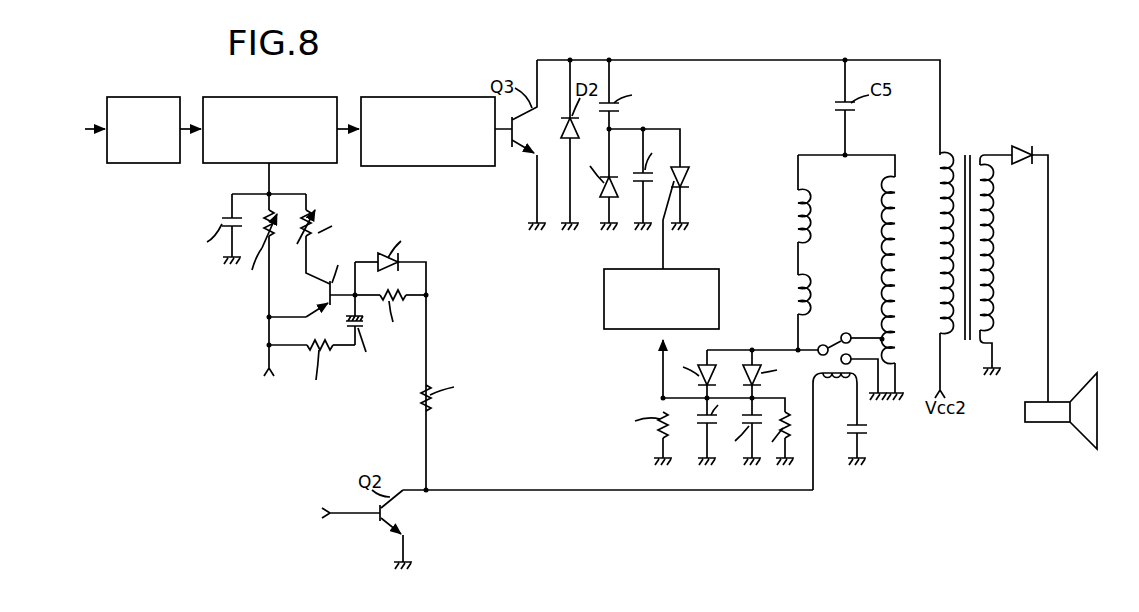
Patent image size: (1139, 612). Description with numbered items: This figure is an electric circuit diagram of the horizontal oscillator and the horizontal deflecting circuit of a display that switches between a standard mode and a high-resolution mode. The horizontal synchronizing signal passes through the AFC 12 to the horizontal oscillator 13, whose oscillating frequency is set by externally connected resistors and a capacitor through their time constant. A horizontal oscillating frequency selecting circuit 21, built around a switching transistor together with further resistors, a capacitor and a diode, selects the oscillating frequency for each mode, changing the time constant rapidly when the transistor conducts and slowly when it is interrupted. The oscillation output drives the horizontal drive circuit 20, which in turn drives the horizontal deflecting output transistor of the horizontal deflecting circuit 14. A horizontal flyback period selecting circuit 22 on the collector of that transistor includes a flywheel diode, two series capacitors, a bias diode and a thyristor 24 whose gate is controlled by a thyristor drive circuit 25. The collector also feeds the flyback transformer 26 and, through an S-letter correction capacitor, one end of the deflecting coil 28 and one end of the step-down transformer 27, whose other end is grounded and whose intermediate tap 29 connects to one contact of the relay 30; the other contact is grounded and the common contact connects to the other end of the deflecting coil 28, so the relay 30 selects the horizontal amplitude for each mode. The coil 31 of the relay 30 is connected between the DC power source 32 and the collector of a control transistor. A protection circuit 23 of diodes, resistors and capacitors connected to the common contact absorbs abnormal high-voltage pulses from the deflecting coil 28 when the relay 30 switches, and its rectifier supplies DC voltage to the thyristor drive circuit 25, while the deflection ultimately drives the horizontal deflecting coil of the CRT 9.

The CRT 9 is at (1083, 389).
The AFC 12 is at (147, 98).
The horizontal oscillator 13 is at (266, 98).
The horizontal deflecting circuit 14 is at (735, 35).
The horizontal drive circuit 20 is at (398, 99).
The horizontal oscillating frequency selecting circuit 21 is at (430, 257).
The horizontal flyback period selecting circuit 22 is at (678, 124).
The protection circuit 23 is at (738, 329).
The thyristor 24 is at (690, 178).
The thyristor drive circuit 25 is at (690, 270).
The flyback transformer 26 is at (972, 157).
The step-down transformer 27 is at (900, 242).
The deflecting coil 28 is at (793, 210).
The intermediate tap 29 is at (883, 336).
The relay 30 is at (828, 343).
The coil 31 is at (835, 431).
The DC power source 32 is at (862, 422).